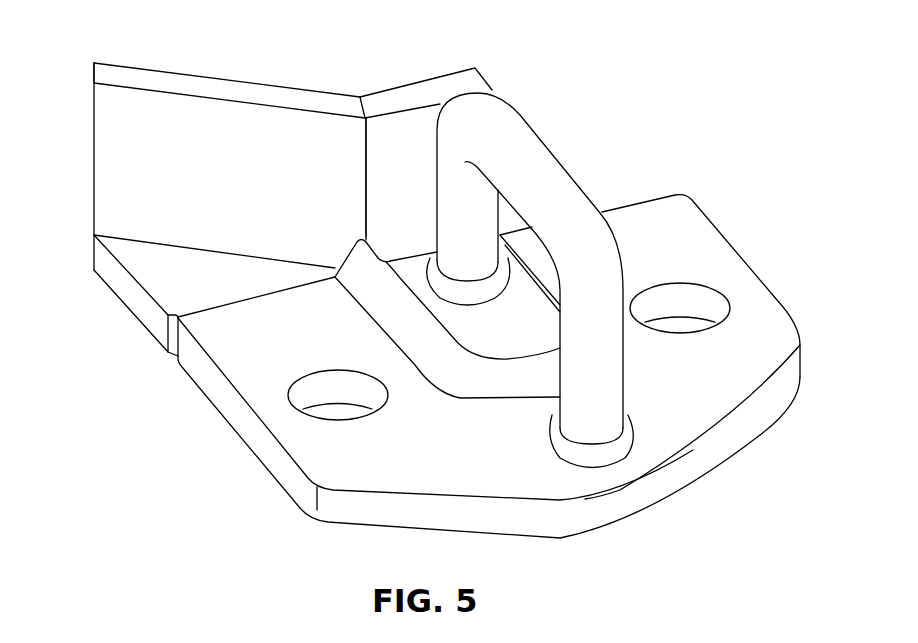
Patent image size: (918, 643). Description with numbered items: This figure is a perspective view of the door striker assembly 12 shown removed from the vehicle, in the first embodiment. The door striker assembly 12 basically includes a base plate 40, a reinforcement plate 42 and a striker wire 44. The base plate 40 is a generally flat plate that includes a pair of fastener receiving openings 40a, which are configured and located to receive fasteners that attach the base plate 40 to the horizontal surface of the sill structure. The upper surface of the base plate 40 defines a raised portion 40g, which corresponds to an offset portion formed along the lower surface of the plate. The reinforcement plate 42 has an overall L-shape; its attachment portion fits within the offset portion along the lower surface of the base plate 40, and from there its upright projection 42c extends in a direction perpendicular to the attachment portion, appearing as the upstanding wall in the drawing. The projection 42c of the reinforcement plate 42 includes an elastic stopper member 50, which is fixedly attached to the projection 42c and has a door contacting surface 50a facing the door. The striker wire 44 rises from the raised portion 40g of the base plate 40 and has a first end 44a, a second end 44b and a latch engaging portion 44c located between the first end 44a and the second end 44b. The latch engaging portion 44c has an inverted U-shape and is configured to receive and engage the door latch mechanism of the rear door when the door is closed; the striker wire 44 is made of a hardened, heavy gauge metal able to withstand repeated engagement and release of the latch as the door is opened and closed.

The door striker assembly 12 is at (660, 57).
The base plate 40 is at (660, 222).
The fastener receiving openings 40a is at (323, 388).
The raised portion 40g is at (470, 377).
The reinforcement plate 42 is at (455, 73).
The projection 42c is at (400, 133).
The striker wire 44 is at (502, 142).
The first end 44a is at (477, 255).
The second end 44b is at (595, 410).
The latch engaging portion 44c is at (553, 187).
The elastic stopper member 50 is at (202, 153).
The door contacting surface 50a is at (318, 142).